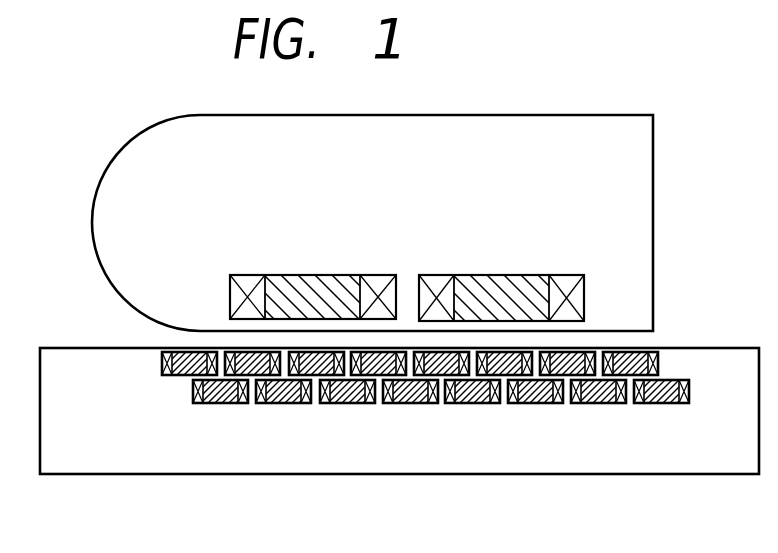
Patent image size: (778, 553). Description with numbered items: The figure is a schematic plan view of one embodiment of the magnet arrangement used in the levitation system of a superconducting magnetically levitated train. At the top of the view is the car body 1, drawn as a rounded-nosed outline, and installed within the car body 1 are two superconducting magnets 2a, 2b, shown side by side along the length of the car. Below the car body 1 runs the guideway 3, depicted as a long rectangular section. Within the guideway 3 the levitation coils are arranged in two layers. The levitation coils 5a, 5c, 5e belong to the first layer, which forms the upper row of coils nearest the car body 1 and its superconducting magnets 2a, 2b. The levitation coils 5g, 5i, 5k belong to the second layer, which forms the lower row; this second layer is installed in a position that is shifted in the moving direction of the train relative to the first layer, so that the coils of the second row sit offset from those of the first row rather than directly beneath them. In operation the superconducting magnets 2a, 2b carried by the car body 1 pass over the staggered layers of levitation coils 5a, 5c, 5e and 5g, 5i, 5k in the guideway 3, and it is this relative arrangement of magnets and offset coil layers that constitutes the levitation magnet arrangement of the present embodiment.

The car body 1 is at (653, 290).
The superconducting magnet 2a is at (308, 275).
The superconducting magnet 2b is at (507, 275).
The guideway 3 is at (700, 349).
The levitation coil 5a is at (183, 376).
The levitation coil 5c is at (256, 376).
The levitation coil 5e is at (315, 376).
The levitation coil 5g is at (225, 404).
The levitation coil 5i is at (283, 404).
The levitation coil 5k is at (345, 404).